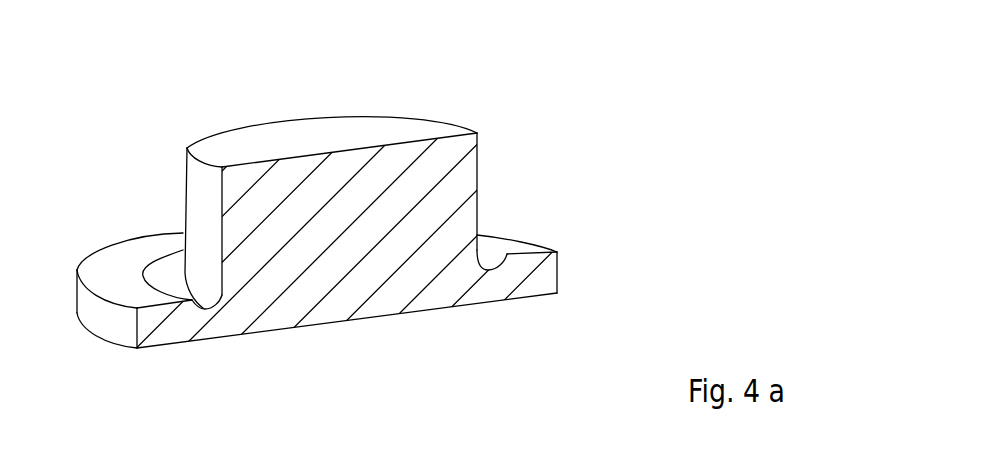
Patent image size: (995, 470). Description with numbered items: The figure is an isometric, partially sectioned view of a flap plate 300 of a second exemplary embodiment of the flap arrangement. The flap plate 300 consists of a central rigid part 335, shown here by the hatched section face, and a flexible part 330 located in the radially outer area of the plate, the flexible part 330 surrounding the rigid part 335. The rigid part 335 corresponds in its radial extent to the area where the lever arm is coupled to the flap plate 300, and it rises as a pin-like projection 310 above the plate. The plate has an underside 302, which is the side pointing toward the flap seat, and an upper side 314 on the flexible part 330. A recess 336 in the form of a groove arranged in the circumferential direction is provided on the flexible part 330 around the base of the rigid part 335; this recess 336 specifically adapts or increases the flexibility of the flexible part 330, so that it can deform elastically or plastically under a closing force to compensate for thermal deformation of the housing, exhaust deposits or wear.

The flap plate 300 is at (589, 137).
The pin 310 is at (307, 134).
The rigid part 335 is at (458, 177).
The flexible part 330 is at (547, 277).
The underside 302 is at (363, 324).
The upper side 314 is at (524, 247).
The recess 336 is at (173, 282).